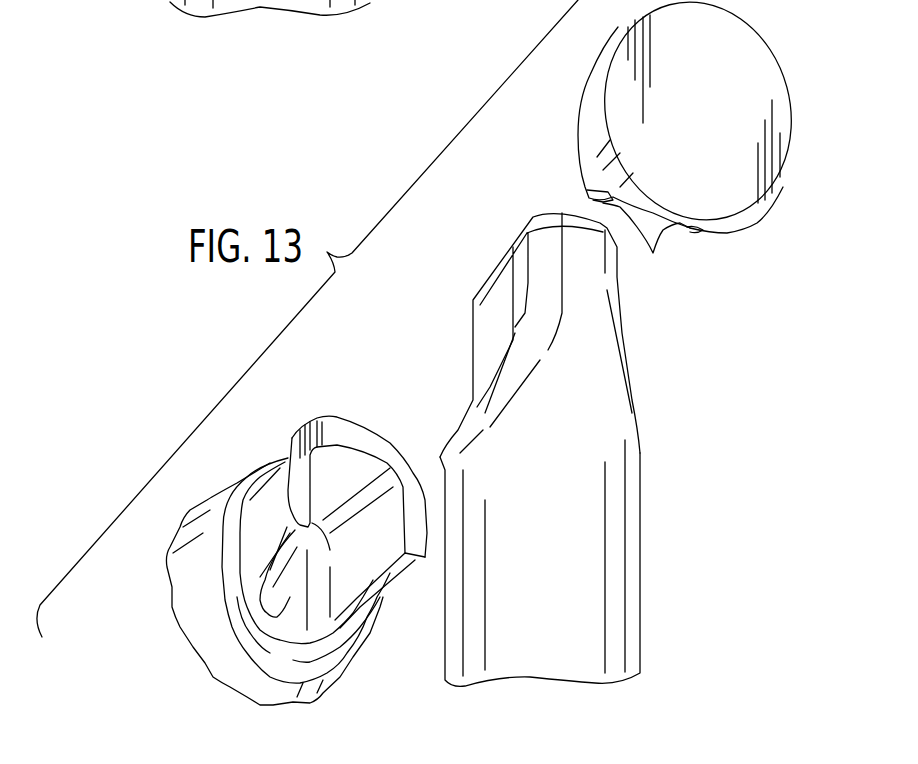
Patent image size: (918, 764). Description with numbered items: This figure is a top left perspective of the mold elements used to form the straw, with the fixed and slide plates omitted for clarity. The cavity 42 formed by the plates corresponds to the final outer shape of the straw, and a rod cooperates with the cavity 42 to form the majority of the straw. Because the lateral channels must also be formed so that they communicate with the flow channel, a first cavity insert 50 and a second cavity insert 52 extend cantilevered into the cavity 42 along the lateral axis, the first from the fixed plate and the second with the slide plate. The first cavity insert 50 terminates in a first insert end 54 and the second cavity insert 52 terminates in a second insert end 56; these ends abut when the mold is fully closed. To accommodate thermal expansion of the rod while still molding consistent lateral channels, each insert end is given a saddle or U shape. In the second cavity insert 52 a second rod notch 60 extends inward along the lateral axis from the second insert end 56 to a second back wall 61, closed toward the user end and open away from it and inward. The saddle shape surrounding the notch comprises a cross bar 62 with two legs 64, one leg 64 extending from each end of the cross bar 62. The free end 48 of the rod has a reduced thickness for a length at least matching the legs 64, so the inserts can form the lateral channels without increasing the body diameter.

The cavity 42 is at (560, 557).
The free end 48 is at (530, 222).
The first cavity insert 50 is at (718, 118).
The second cavity insert 52 is at (193, 607).
The first insert end 54 is at (577, 152).
The second insert end 56 is at (383, 443).
The second rod notch 60 is at (345, 537).
The second back wall 61 is at (290, 580).
The cross bar 62 is at (357, 433).
The legs 64 is at (653, 254).